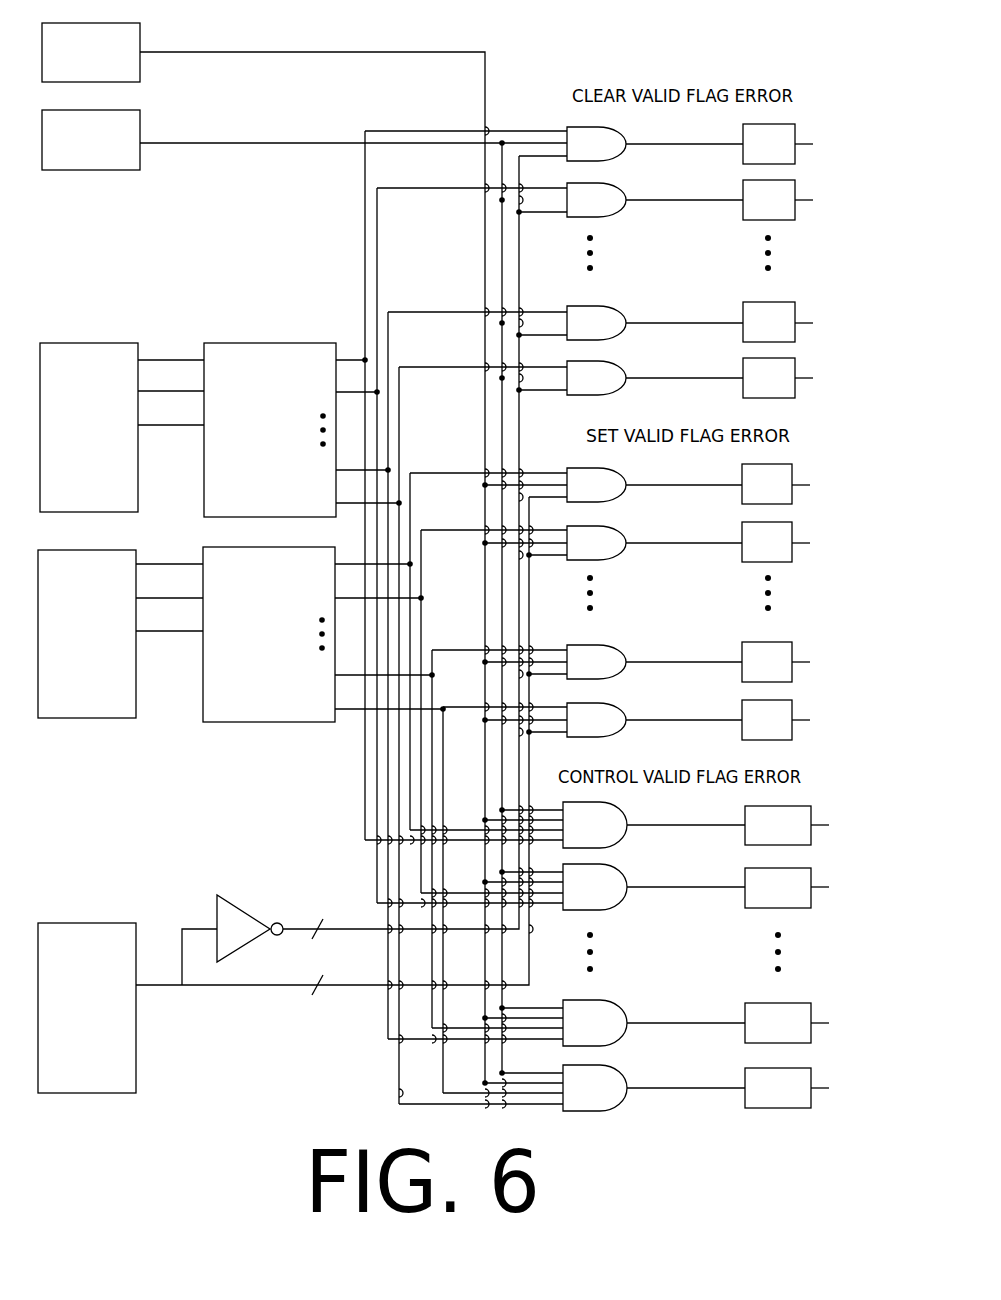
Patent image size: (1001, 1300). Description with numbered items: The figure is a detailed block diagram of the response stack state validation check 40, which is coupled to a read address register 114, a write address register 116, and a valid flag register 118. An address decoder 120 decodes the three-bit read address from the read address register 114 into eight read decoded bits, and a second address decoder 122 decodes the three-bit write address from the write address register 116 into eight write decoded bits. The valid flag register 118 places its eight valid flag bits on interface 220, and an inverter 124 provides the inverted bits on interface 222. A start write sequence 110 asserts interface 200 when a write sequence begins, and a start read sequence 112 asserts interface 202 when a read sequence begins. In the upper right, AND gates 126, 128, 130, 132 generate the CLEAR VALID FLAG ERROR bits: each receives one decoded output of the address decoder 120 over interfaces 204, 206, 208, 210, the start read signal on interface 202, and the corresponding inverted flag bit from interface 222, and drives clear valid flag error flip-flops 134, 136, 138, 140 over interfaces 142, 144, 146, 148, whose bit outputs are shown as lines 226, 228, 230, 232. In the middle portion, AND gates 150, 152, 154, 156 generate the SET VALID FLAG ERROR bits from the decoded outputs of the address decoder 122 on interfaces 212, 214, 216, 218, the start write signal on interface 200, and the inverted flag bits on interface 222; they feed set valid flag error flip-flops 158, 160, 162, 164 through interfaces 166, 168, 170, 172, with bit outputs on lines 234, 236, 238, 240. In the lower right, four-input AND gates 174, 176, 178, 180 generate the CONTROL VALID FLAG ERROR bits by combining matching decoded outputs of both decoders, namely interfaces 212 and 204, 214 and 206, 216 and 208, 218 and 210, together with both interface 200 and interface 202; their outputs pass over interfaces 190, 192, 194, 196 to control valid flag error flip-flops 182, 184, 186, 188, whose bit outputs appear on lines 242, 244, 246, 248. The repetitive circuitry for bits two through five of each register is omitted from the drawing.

The response stack state validation check 40 is at (560, 53).
The start write sequence 110 is at (128, 35).
The start read sequence 112 is at (131, 122).
The read address register 114 is at (86, 348).
The write address register 116 is at (63, 557).
The valid flag register 118 is at (74, 933).
The address decoder 120 is at (282, 350).
The address decoder 122 is at (282, 716).
The inverter 124 is at (222, 904).
The AND gate 126 is at (614, 132).
The AND gate 128 is at (614, 203).
The AND gate 130 is at (614, 312).
The AND gate 132 is at (612, 386).
The clear valid flag error flip-flop 134 is at (740, 150).
The clear valid flag error flip-flop 136 is at (740, 208).
The clear valid flag error flip-flop 138 is at (740, 330).
The clear valid flag error flip-flop 140 is at (740, 388).
The interface 142 is at (670, 144).
The interface 144 is at (668, 200).
The interface 146 is at (672, 323).
The interface 148 is at (668, 378).
The AND gate 150 is at (614, 480).
The AND gate 152 is at (614, 545).
The AND gate 154 is at (614, 652).
The AND gate 156 is at (614, 728).
The set valid flag error flip-flop 158 is at (740, 490).
The set valid flag error flip-flop 160 is at (740, 548).
The set valid flag error flip-flop 162 is at (740, 645).
The set valid flag error flip-flop 164 is at (740, 728).
The interface 166 is at (668, 485).
The interface 168 is at (668, 543).
The interface 170 is at (652, 662).
The interface 172 is at (668, 720).
The AND gate 174 is at (615, 838).
The AND gate 176 is at (615, 897).
The AND gate 178 is at (615, 1012).
The AND gate 180 is at (615, 1103).
The control valid flag error flip-flop 182 is at (744, 836).
The control valid flag error flip-flop 184 is at (744, 897).
The control valid flag error flip-flop 186 is at (744, 1008).
The control valid flag error flip-flop 188 is at (744, 1072).
The interface 190 is at (670, 825).
The interface 192 is at (670, 887).
The interface 194 is at (648, 1023).
The interface 196 is at (680, 1088).
The interface 200 is at (300, 53).
The interface 202 is at (220, 145).
The interface 204 is at (357, 178).
The interface 206 is at (390, 188).
The interface 208 is at (406, 312).
The interface 210 is at (419, 367).
The interface 212 is at (421, 541).
The interface 214 is at (424, 571).
The interface 216 is at (436, 650).
The interface 218 is at (445, 707).
The interface 220 is at (240, 993).
The interface 222 is at (380, 930).
The clear valid flag error output 0 226 is at (810, 147).
The clear valid flag error output 1 228 is at (810, 203).
The clear valid flag error output 6 230 is at (810, 326).
The clear valid flag error output 7 232 is at (810, 381).
The set valid flag error output 0 234 is at (808, 487).
The set valid flag error output 1 236 is at (808, 545).
The set valid flag error output 6 238 is at (808, 664).
The set valid flag error output 7 240 is at (808, 722).
The control valid flag error output 0 242 is at (828, 829).
The control valid flag error output 1 244 is at (828, 891).
The control valid flag error output 6 246 is at (828, 1025).
The control valid flag error output 7 248 is at (828, 1092).